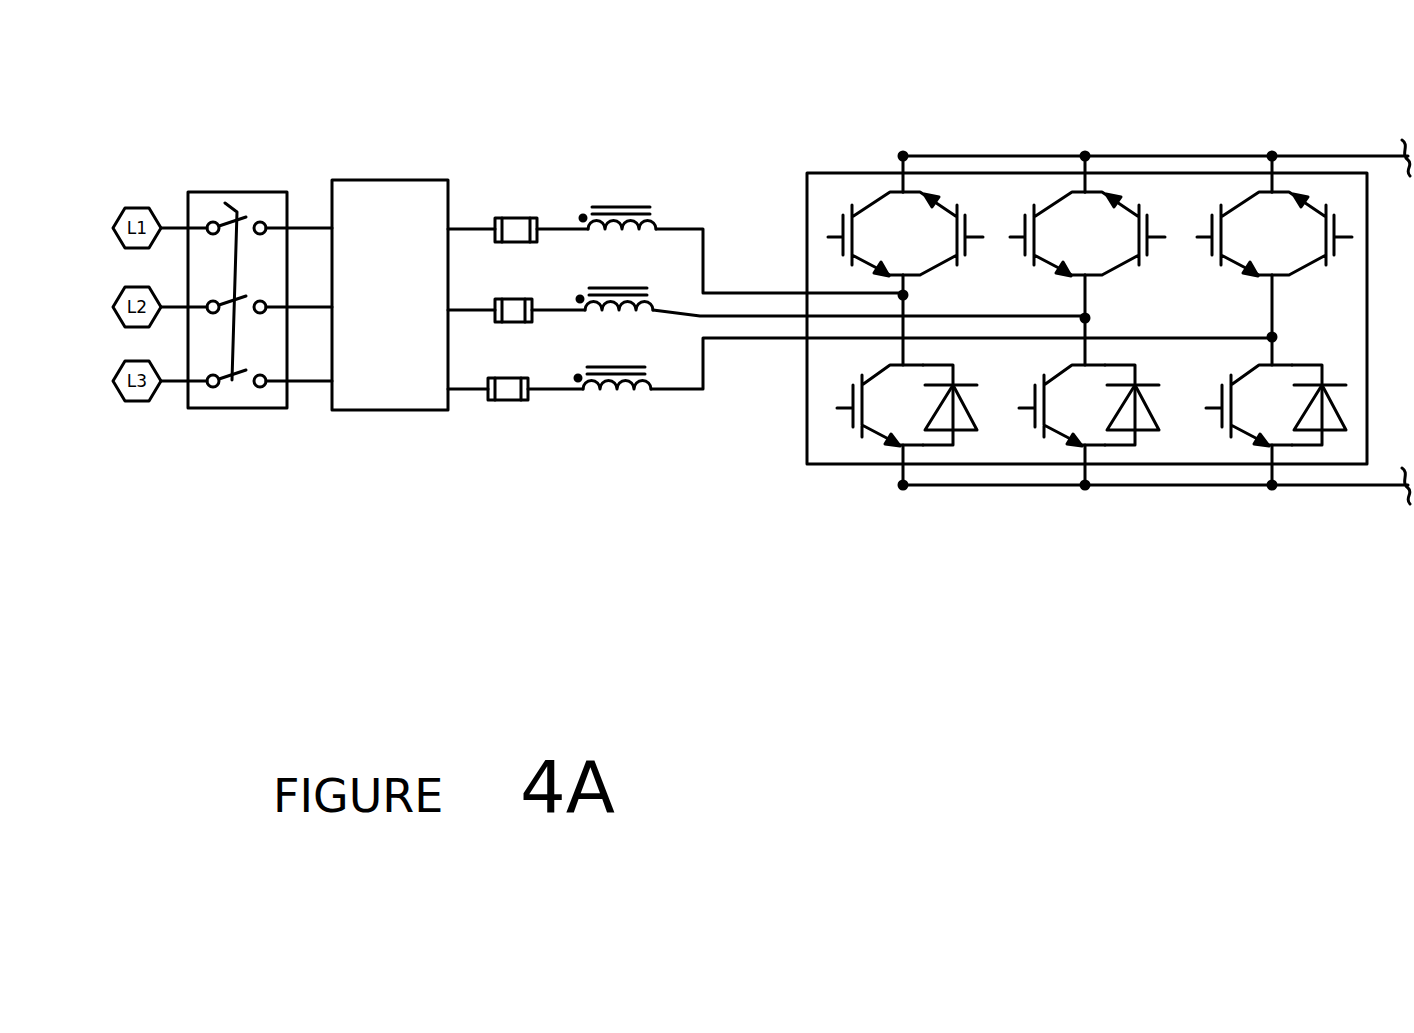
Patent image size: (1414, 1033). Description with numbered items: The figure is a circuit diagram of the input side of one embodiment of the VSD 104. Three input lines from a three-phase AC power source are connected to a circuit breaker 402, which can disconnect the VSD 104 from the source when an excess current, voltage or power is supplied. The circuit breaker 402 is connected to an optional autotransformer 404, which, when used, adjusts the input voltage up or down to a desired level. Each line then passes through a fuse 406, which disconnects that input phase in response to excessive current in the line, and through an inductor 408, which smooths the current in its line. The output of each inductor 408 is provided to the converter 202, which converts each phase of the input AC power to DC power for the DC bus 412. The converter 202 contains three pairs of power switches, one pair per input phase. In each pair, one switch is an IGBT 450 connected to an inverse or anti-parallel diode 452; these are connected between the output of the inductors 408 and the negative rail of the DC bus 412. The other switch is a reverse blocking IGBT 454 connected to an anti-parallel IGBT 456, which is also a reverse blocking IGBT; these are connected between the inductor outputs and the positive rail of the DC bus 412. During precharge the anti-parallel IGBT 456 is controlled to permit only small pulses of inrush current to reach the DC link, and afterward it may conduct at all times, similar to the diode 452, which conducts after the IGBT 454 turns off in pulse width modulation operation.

The circuit breaker 402 is at (252, 408).
The autotransformer 404 is at (410, 410).
The fuses 406 is at (512, 400).
The inductors 408 is at (633, 389).
The converter module 202 is at (853, 464).
The DC bus 412 is at (1127, 487).
The reverse blocking IGBT 454 is at (842, 237).
The anti-parallel IGBT 456 is at (972, 252).
The IGBT 450 is at (883, 372).
The anti-parallel diode 452 is at (975, 408).
The variable speed drive 104 is at (648, 524).